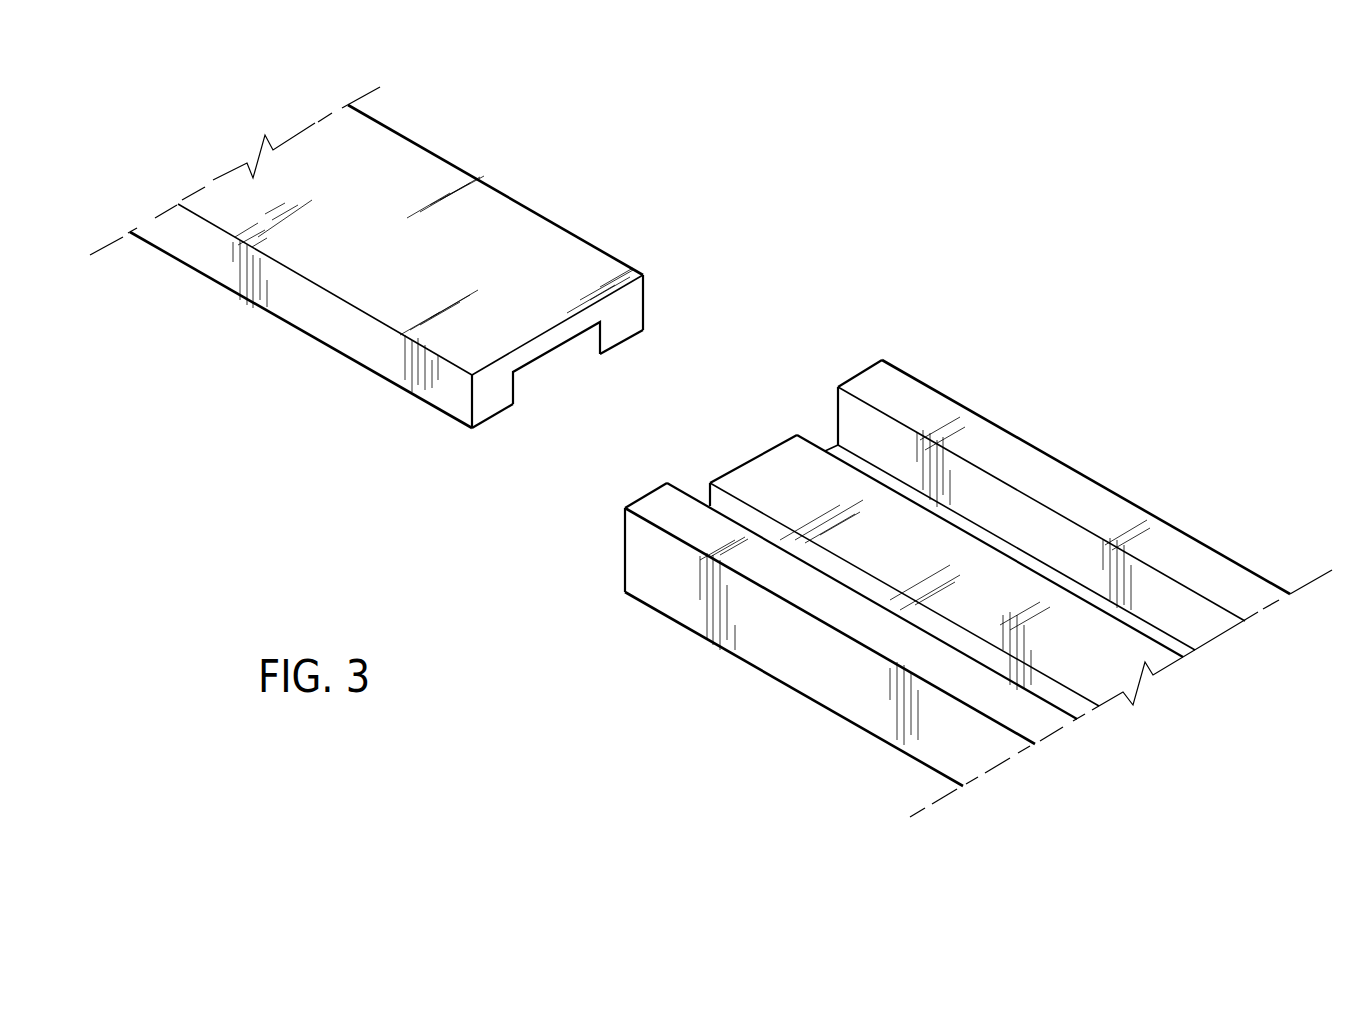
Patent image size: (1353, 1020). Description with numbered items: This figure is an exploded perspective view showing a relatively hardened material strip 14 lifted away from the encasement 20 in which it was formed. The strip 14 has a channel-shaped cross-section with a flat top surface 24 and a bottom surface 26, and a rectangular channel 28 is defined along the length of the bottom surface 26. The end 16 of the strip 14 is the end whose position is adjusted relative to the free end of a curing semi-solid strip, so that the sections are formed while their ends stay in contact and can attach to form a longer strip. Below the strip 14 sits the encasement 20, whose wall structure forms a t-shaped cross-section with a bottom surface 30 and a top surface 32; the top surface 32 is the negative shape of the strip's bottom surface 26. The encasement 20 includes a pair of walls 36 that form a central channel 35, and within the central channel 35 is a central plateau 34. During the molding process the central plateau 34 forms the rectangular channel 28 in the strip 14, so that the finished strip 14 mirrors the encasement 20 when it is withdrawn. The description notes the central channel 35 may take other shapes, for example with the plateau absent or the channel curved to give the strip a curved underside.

The relatively hardened material strip 14 is at (388, 270).
The end of relatively hardened material strip 16 is at (632, 310).
The encasement 20 is at (978, 568).
The flat top surface 24 is at (464, 268).
The bottom surface 26 is at (492, 418).
The channel 28 is at (570, 383).
The bottom surface of encasement 30 is at (792, 690).
The top surface of encasement 32 is at (850, 413).
The central plateau 34 is at (805, 492).
The central channel 35 is at (1147, 632).
The pair of walls 36 is at (654, 535).